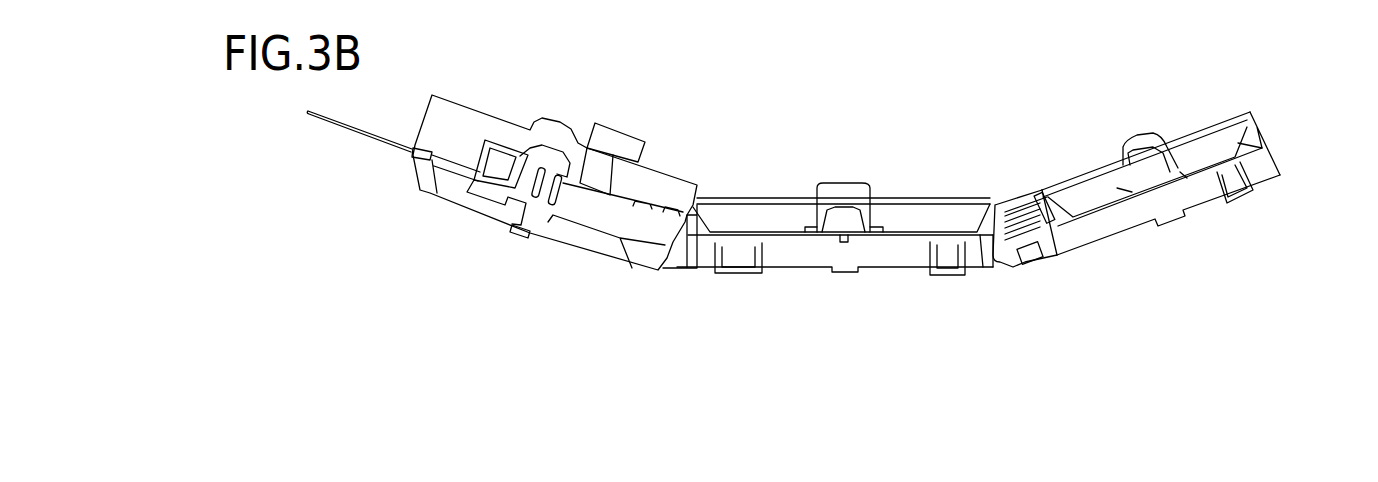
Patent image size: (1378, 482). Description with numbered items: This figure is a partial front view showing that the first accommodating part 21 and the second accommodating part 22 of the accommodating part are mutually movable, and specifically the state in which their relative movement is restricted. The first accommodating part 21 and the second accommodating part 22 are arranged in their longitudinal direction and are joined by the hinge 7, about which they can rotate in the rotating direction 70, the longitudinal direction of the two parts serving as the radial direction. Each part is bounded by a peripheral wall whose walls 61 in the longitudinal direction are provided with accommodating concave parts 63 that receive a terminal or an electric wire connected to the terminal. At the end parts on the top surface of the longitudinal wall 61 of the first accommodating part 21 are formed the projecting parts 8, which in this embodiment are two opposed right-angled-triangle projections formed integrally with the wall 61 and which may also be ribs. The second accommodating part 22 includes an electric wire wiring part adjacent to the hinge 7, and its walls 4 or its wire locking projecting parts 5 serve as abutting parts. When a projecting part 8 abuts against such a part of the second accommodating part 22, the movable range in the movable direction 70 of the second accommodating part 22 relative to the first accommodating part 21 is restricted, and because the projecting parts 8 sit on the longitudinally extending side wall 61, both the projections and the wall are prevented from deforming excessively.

The wall 4 is at (1005, 267).
The wire locking projecting part 5 is at (1013, 197).
The hinge 7 is at (1032, 268).
The projecting part 8 is at (705, 275).
The first accommodating part 21 is at (843, 160).
The second accommodating part 22 is at (1109, 120).
The wall in the longitudinal direction 61 is at (785, 278).
The accommodating concave part 63 is at (947, 278).
The rotating direction 70 is at (620, 313).